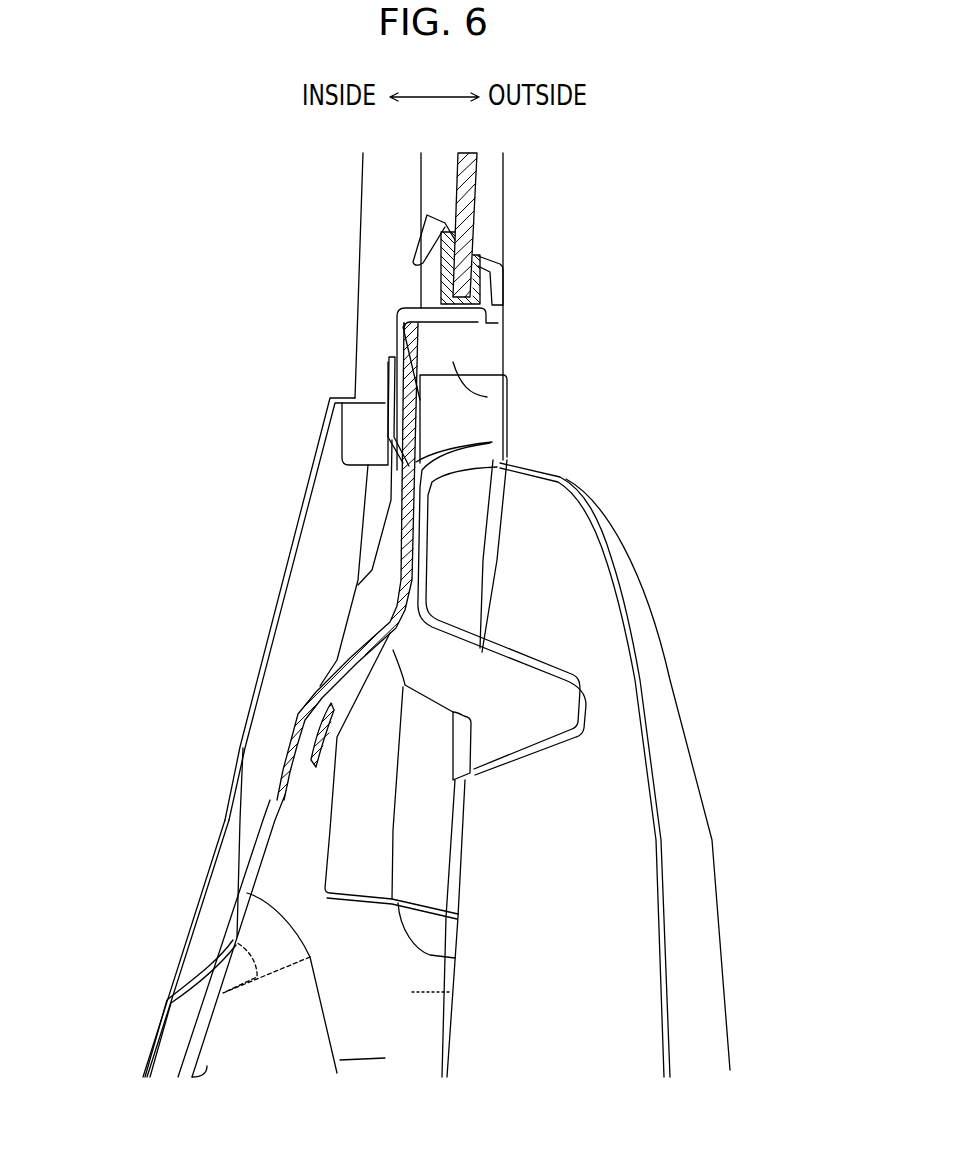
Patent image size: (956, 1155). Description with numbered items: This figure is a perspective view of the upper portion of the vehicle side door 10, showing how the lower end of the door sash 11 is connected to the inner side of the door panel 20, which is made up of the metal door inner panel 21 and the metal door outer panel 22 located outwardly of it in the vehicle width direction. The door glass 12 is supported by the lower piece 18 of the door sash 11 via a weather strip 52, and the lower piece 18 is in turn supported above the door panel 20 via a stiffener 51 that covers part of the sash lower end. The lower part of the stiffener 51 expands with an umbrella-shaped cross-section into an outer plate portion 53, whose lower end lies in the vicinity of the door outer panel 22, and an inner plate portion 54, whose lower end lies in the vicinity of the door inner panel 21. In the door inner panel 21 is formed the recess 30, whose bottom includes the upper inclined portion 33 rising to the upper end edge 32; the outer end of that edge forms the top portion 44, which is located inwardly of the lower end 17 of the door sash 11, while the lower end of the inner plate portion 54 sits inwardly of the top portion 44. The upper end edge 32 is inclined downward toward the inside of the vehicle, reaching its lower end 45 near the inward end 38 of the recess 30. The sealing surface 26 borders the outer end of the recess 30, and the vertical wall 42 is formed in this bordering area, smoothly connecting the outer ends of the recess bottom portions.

The vehicle side door 10 is at (664, 268).
The door sash 11 is at (480, 855).
The door glass 12 is at (478, 168).
The lower end of the door sash 17 is at (455, 958).
The lower piece 18 is at (507, 390).
The door panel 20 is at (669, 645).
The door inner panel 21 is at (240, 748).
The door outer panel 22 is at (660, 802).
The sealing surface 26 is at (412, 992).
The recess 30 is at (211, 1046).
The upper end edge 32 is at (228, 940).
The upper inclined portion 33 is at (217, 1017).
The inward end of the recess 38 is at (207, 1068).
The vertical wall 42 is at (340, 1062).
The top portion 44 is at (247, 893).
The lower end of the inclined edge 45 is at (207, 967).
The stiffener 51 is at (310, 678).
The weather strip 52 is at (478, 263).
The outer plate portion 53 is at (527, 663).
The inner plate portion 54 is at (293, 723).